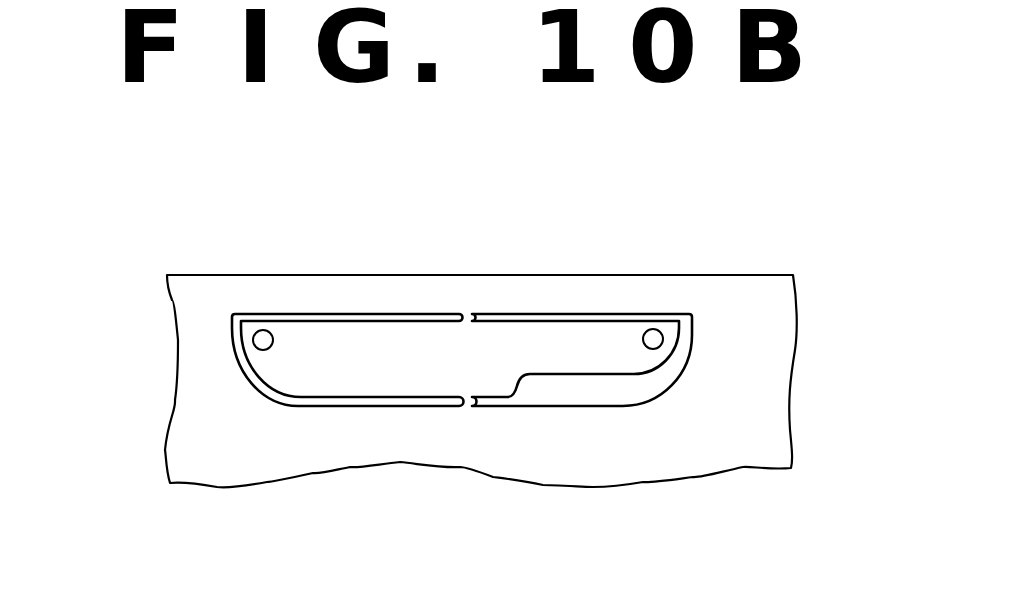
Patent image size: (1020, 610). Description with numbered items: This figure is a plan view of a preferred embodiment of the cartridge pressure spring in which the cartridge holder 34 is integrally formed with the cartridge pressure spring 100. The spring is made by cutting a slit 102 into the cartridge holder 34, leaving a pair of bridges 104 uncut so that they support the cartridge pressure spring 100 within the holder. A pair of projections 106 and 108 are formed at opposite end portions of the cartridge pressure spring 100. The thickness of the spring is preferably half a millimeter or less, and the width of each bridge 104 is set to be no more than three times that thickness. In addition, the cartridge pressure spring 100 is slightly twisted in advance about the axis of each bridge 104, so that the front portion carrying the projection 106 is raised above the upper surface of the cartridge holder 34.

The cartridge holder 34 is at (738, 292).
The cartridge pressure spring 100 is at (360, 345).
The slit 102 is at (352, 403).
The bridge 104 is at (463, 316).
The projection 106 is at (655, 341).
The projection 108 is at (268, 338).